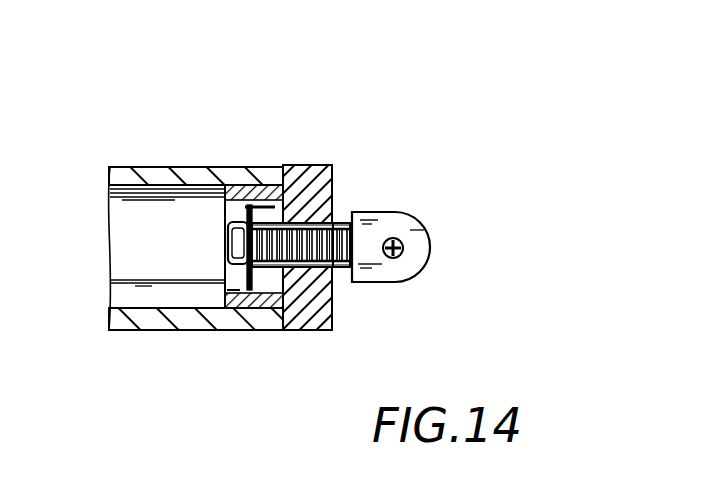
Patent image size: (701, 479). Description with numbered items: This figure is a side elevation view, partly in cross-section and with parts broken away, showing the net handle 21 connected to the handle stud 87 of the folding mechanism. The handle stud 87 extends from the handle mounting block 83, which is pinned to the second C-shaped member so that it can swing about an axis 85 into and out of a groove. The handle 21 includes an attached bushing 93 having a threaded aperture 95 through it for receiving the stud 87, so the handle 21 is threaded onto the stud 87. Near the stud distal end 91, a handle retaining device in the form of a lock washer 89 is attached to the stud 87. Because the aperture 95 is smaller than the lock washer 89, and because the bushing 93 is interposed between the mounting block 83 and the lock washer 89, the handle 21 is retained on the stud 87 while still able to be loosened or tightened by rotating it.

The handle 21 is at (145, 167).
The lock washer 89 is at (260, 167).
The bushing 93 is at (307, 167).
The stud distal end 91 is at (230, 252).
The handle stud 87 is at (334, 220).
The handle mounting block 83 is at (398, 217).
The axis 85 is at (401, 254).
The threaded aperture 95 is at (333, 270).